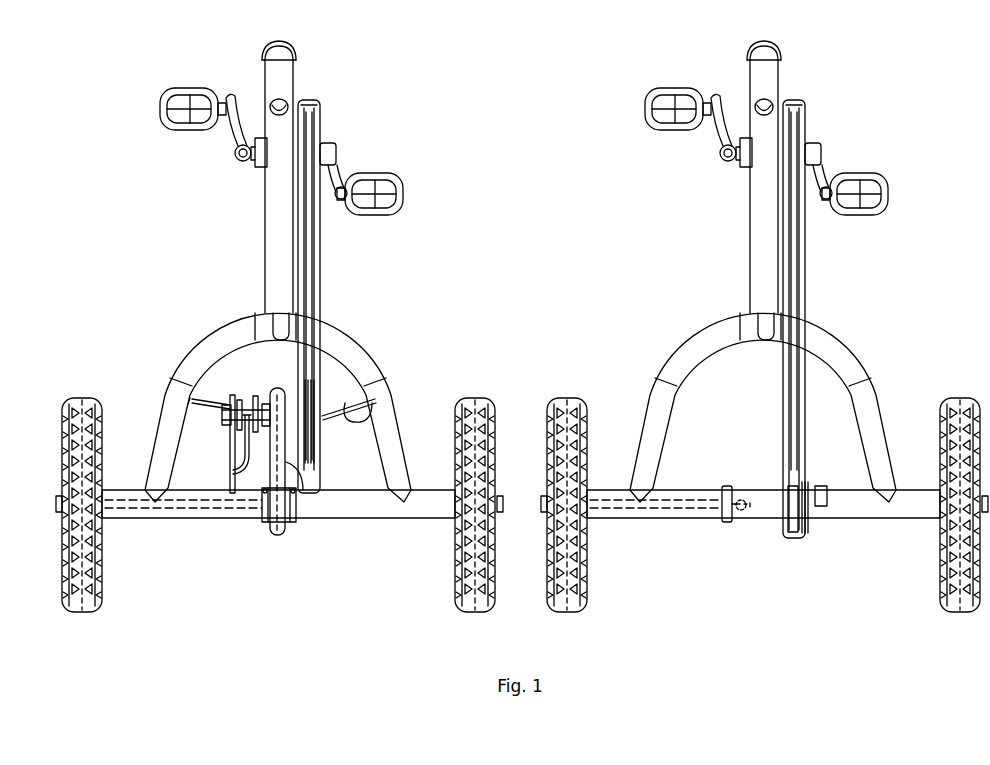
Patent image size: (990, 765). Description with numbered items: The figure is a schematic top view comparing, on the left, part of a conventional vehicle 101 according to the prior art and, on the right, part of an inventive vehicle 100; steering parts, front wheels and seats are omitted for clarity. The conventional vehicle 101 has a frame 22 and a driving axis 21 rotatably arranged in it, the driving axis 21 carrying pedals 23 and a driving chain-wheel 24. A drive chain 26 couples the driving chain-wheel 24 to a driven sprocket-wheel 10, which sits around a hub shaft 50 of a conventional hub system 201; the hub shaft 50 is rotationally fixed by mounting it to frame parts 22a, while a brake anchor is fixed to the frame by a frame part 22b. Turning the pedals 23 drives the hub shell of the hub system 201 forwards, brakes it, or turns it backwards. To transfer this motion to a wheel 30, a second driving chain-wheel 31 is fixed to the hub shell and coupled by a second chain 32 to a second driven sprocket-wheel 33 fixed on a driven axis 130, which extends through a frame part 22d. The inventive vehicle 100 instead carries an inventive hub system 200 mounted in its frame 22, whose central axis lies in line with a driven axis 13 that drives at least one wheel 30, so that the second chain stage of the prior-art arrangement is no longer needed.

The inventive vehicle 100 is at (764, 329).
The conventional vehicle 101 is at (279, 329).
The driven sprocket-wheel 10 is at (332, 454).
The driven axis 13 is at (764, 551).
The driving axis 21 is at (258, 150).
The frame 22 is at (370, 352).
The frame parts 22a is at (232, 437).
The frame part 22b is at (248, 455).
The frame part 22d is at (279, 553).
The pedals 23 is at (172, 145).
The driving chain-wheel 24 is at (589, 353).
The drive chain 26 is at (313, 276).
The wheel 30 is at (78, 600).
The second driving chain-wheel 31 is at (275, 386).
The second chain 32 is at (289, 467).
The second driven sprocket-wheel 33 is at (278, 537).
The hub shaft 50 is at (237, 410).
The driven axis 130 is at (210, 509).
The inventive hub system 200 is at (770, 509).
The conventional hub system 201 is at (260, 404).